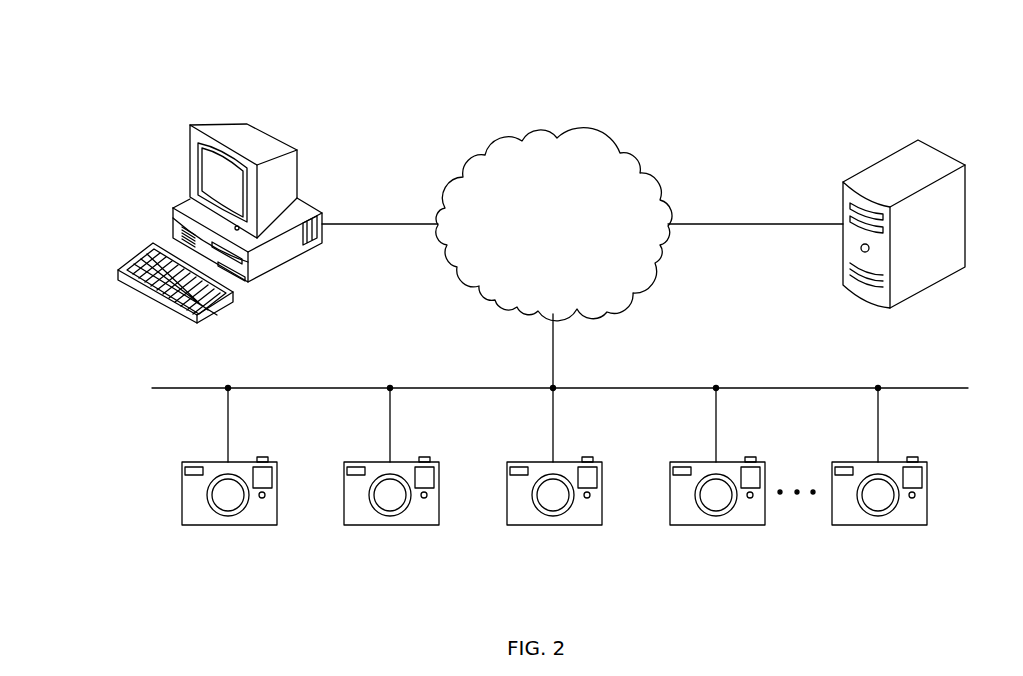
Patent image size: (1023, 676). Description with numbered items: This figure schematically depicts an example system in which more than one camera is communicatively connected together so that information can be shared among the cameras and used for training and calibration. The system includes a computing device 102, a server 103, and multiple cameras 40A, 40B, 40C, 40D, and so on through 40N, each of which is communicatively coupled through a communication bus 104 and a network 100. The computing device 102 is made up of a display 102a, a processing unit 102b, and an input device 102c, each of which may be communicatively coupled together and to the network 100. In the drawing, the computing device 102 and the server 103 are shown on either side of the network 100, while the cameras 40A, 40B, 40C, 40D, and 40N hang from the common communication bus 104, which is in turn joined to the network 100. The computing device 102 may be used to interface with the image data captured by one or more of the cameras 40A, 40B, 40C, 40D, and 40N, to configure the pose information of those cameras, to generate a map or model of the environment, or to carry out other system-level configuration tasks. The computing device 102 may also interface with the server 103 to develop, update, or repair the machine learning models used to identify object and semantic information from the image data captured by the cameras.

The network 100 is at (633, 157).
The computing device 102 is at (295, 104).
The display 102a is at (190, 138).
The processing unit 102b is at (273, 265).
The input device 102c is at (210, 310).
The server 103 is at (947, 136).
The communication bus 104 is at (922, 388).
The camera 40A is at (229, 483).
The camera 40B is at (391, 483).
The camera 40C is at (554, 483).
The camera 40D is at (717, 483).
The camera 40N is at (879, 483).